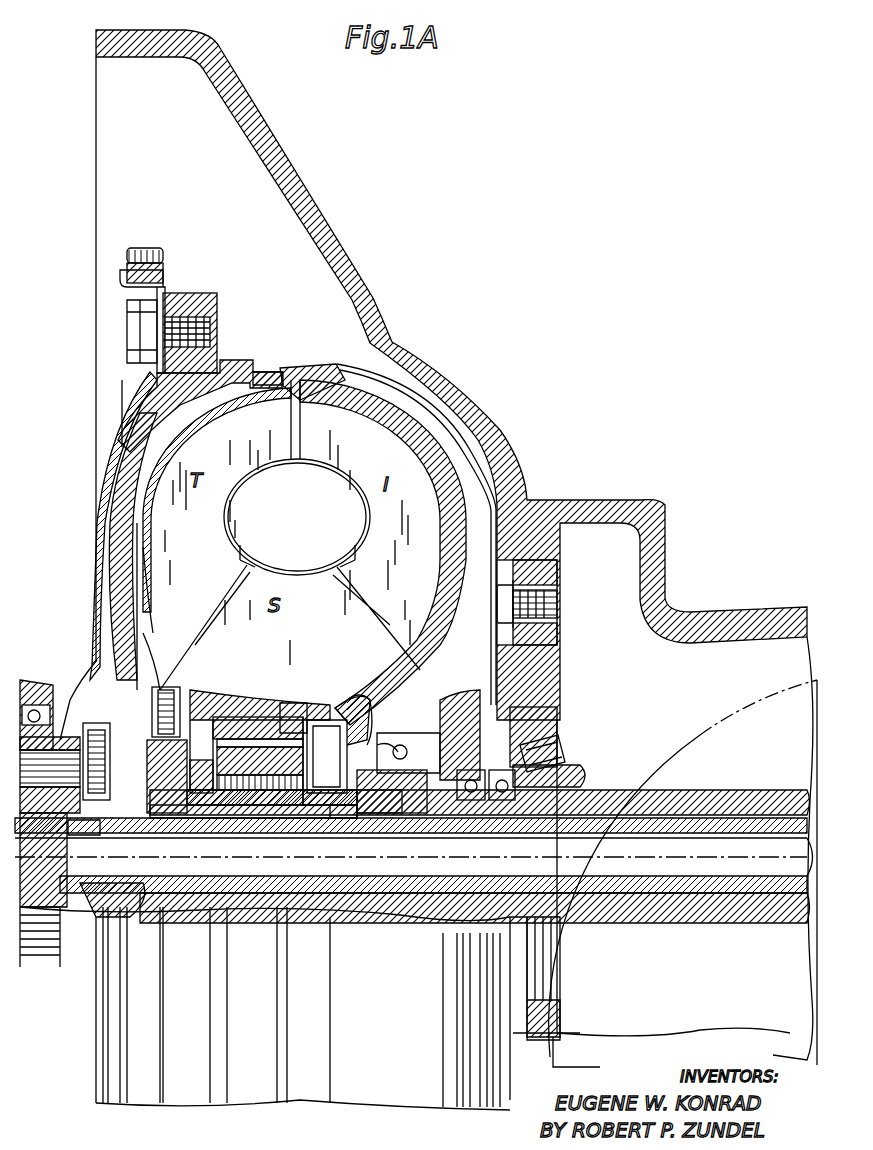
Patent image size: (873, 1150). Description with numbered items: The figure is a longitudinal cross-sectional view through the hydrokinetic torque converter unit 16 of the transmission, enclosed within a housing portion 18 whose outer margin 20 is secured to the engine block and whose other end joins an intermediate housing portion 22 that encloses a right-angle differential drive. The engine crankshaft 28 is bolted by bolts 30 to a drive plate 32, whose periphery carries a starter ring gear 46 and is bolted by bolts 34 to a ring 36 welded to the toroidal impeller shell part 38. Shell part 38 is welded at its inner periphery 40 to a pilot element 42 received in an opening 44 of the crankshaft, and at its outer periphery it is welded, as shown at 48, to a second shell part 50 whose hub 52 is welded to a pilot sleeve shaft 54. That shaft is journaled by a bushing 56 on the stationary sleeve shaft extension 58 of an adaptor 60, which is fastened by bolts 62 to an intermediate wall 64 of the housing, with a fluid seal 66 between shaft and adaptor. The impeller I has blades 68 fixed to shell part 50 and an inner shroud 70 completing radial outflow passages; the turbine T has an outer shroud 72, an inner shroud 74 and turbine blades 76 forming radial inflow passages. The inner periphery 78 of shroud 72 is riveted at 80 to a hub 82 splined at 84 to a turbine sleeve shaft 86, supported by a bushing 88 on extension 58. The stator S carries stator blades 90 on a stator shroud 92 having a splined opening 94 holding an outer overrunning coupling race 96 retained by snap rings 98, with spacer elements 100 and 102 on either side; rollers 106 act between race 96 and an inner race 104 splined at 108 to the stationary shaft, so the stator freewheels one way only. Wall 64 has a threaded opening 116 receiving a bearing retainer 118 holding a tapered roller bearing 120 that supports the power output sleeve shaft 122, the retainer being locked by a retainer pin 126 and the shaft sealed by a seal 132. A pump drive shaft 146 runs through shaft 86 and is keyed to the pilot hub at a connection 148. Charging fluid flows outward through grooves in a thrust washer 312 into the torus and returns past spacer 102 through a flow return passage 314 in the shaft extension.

The hydrokinetic torque converter unit 16 is at (300, 371).
The housing portion 18 is at (340, 222).
The outer margin 20 is at (250, 100).
The intermediate housing portion 22 is at (760, 612).
The crankshaft 28 is at (60, 700).
The bolts 30 is at (58, 737).
The drive plate 32 is at (96, 534).
The bolts 34 is at (127, 313).
The ring 36 is at (218, 293).
The impeller shell part 38 is at (233, 360).
The inner periphery 40 is at (130, 905).
The pilot element 42 is at (100, 900).
The opening 44 is at (45, 930).
The ring gear 46 is at (150, 248).
The weld 48 is at (283, 364).
The second shell part 50 is at (360, 410).
The hub 52 is at (370, 712).
The pilot sleeve shaft 54 is at (410, 813).
The bushing 56 is at (385, 813).
The stationary sleeve shaft extension 58 is at (236, 805).
The adaptor 60 is at (550, 672).
The bolts 62 is at (548, 590).
The intermediate wall 64 is at (550, 575).
The fluid seal 66 is at (425, 733).
The blades 68 is at (375, 514).
The inner shroud 70 is at (352, 494).
The outer shroud 72 is at (208, 422).
The inner shroud 74 is at (238, 498).
The turbine blades 76 is at (180, 465).
The inner periphery 78 is at (155, 715).
The rivets 80 is at (163, 687).
The hub 82 is at (160, 813).
The internal spline 84 is at (202, 793).
The turbine sleeve shaft 86 is at (633, 885).
The bushing 88 is at (260, 818).
The stator blades 90 is at (238, 593).
The stator shroud 92 is at (235, 700).
The splined opening 94 is at (262, 700).
The outer overrunning coupling race 96 is at (250, 745).
The snap rings 98 is at (212, 700).
The spacer element 100 is at (200, 670).
The spacer element 102 is at (350, 700).
The inner overrunning coupling race 104 is at (318, 718).
The rollers 106 is at (292, 703).
The spline 108 is at (320, 805).
The opening 116 is at (520, 760).
The bearing retainer 118 is at (530, 768).
The tapered roller bearing 120 is at (555, 750).
The power output sleeve shaft 122 is at (760, 795).
The retainer pin 126 is at (468, 700).
The seal 132 is at (560, 775).
The pump drive shaft 146 is at (705, 880).
The connection 148 is at (105, 917).
The thrust washer 312 is at (108, 832).
The flow return passage 314 is at (345, 818).